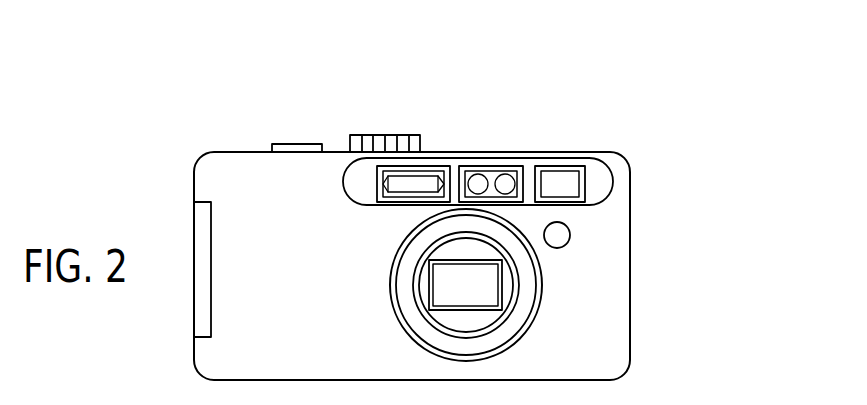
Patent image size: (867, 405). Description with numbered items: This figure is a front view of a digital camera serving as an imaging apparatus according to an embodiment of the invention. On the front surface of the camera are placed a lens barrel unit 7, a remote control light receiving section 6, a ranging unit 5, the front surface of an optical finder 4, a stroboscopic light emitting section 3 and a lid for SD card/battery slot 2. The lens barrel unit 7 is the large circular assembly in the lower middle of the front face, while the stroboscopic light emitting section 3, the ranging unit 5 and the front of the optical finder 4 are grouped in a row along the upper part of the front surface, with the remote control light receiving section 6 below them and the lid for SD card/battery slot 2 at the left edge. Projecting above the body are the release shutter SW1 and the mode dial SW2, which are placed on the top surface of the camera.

The lid for SD card/battery slot 2 is at (200, 235).
The stroboscopic light emitting section 3 is at (430, 183).
The optical finder 4 is at (573, 186).
The ranging unit 5 is at (497, 188).
The remote control light receiving section 6 is at (562, 240).
The lens barrel unit 7 is at (482, 318).
The release shutter SW1 is at (288, 143).
The mode dial SW2 is at (373, 134).